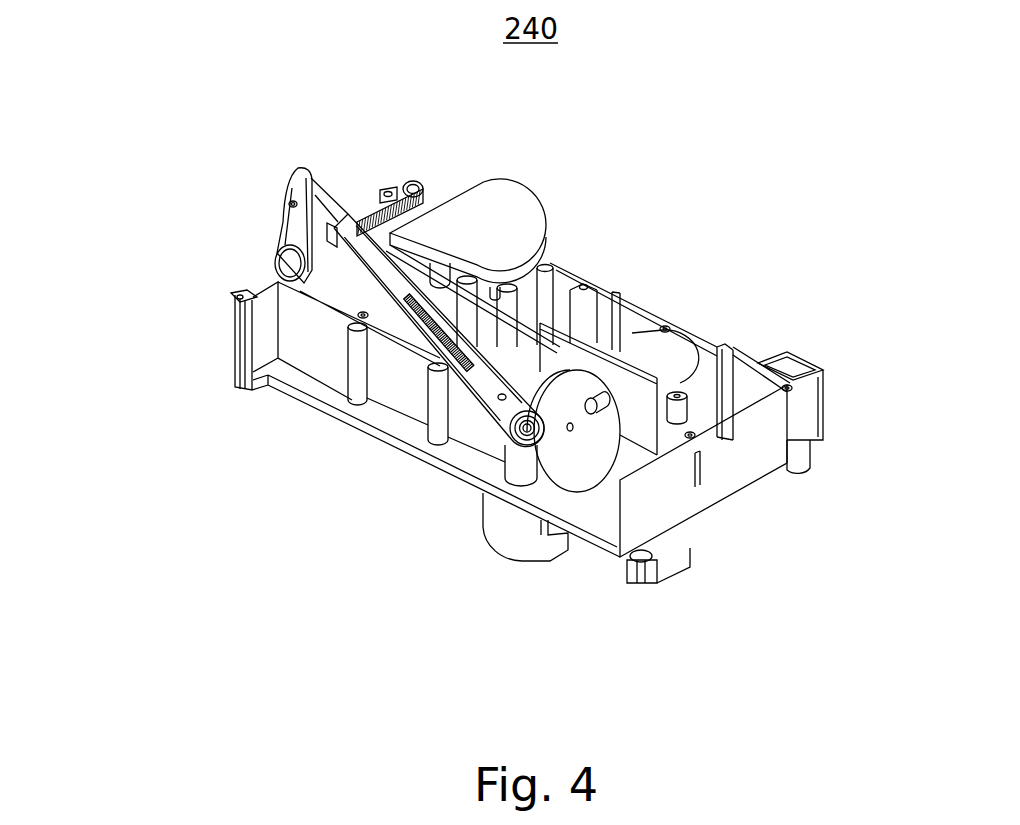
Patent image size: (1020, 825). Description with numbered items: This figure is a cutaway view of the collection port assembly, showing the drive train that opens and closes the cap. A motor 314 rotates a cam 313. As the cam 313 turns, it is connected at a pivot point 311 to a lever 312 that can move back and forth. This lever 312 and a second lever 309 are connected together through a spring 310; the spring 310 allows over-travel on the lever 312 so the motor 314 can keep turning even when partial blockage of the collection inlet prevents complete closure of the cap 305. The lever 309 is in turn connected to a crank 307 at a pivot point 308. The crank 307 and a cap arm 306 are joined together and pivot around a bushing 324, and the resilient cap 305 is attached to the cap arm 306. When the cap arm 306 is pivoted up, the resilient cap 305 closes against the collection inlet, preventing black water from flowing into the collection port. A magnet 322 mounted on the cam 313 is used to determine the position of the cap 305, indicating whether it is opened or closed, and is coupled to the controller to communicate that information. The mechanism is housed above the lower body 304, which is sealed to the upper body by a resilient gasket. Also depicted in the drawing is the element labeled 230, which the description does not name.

The motor 230 is at (513, 560).
The lower body 304 is at (737, 463).
The resilient cap 305 is at (468, 235).
The cap arm 306 is at (367, 213).
The crank 307 is at (290, 227).
The pivot point 308 is at (285, 202).
The lever 309 is at (327, 218).
The spring 310 is at (420, 344).
The pivot point 311 is at (519, 440).
The lever 312 is at (487, 421).
The cam 313 is at (588, 489).
The motor 314 is at (670, 349).
The magnet 322 is at (604, 405).
The bushing 324 is at (277, 268).